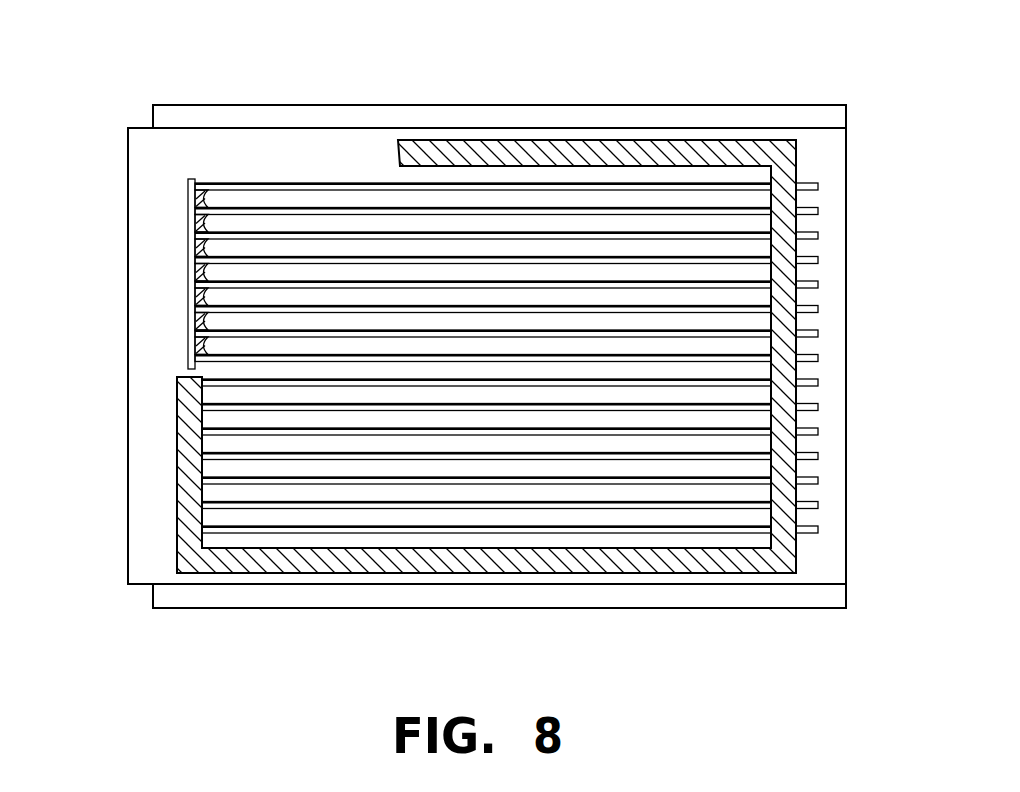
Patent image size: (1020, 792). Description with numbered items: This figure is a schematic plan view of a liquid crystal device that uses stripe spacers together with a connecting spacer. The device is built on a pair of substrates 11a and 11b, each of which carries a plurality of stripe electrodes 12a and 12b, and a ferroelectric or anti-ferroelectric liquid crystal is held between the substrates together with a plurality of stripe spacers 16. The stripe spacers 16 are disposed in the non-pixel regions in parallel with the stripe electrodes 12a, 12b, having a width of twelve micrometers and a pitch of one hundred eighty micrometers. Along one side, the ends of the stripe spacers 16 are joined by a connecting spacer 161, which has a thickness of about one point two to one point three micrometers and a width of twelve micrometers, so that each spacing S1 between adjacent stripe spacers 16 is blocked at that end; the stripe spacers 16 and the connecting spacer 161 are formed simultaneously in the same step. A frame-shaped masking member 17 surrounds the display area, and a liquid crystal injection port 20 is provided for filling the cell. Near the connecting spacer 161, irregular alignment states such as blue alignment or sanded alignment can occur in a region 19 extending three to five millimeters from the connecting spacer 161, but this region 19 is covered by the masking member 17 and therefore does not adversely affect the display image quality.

The substrate 11a is at (128, 148).
The substrate 11b is at (180, 105).
The stripe electrodes 12a is at (134, 208).
The stripe electrodes 12b is at (338, 113).
The stripe spacers 16 is at (383, 181).
The frame-shaped masking member 17 is at (308, 574).
The region 19 is at (210, 193).
The liquid crystal injection port 20 is at (848, 313).
The connecting spacer 161 is at (188, 222).
The spacing S1 is at (296, 192).